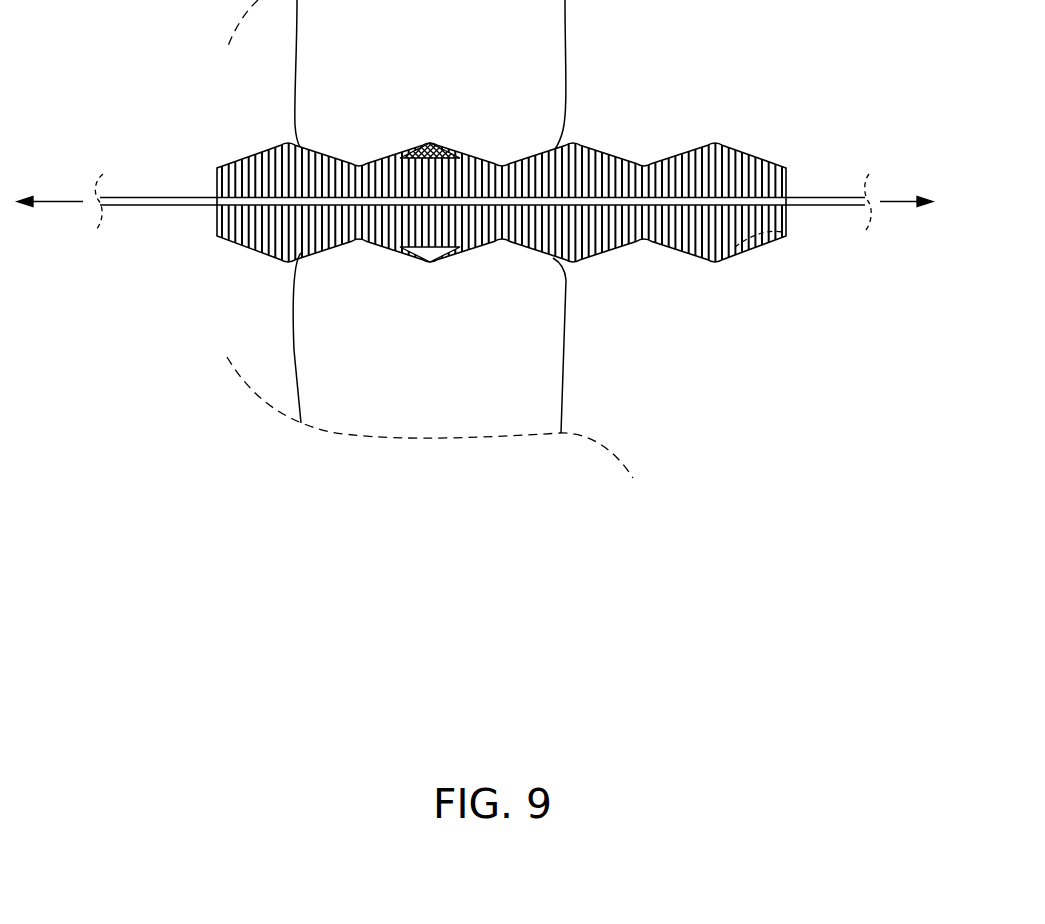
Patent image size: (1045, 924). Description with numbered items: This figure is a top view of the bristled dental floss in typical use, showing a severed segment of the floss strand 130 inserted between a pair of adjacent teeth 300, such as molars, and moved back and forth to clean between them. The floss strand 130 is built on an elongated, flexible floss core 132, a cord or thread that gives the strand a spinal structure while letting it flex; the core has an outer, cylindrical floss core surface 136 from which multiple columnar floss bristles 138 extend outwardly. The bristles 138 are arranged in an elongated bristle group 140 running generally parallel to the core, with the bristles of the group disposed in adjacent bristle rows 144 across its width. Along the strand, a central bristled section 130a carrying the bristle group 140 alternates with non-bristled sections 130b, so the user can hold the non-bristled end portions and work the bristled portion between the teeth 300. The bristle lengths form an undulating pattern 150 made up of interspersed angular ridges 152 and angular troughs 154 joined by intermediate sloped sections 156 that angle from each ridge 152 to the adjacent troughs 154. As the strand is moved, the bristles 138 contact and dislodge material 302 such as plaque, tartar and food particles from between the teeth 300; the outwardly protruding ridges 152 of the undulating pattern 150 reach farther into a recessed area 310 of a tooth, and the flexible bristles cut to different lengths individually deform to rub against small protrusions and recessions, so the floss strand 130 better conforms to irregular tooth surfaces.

The floss strand 130 is at (752, 130).
The bristled section 130a is at (774, 148).
The non-bristled section 130b is at (122, 197).
The floss core 132 is at (194, 197).
The floss core surface 136 is at (233, 218).
The floss bristles 138 is at (782, 237).
The bristle group 140 is at (687, 137).
The bristle rows 144 is at (222, 150).
The undulating pattern 150 is at (721, 276).
The undulating pattern ridges 152 is at (288, 142).
The undulating pattern troughs 154 is at (501, 166).
The undulating pattern sloped sections 156 is at (334, 158).
The teeth 300 is at (308, 63).
The material 302 is at (431, 142).
The recessed area 310 is at (412, 147).